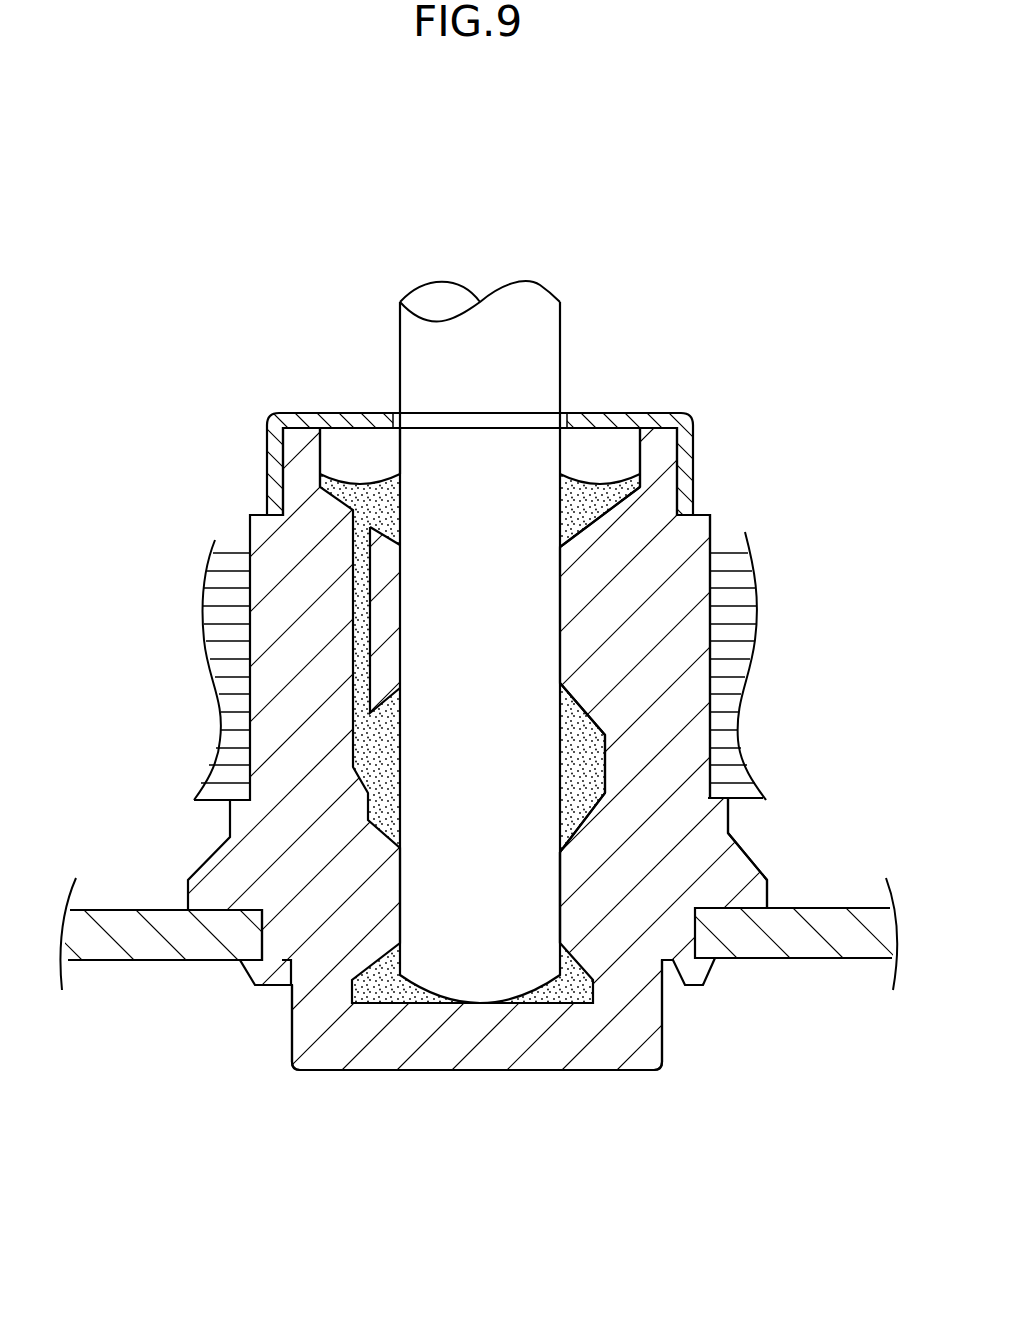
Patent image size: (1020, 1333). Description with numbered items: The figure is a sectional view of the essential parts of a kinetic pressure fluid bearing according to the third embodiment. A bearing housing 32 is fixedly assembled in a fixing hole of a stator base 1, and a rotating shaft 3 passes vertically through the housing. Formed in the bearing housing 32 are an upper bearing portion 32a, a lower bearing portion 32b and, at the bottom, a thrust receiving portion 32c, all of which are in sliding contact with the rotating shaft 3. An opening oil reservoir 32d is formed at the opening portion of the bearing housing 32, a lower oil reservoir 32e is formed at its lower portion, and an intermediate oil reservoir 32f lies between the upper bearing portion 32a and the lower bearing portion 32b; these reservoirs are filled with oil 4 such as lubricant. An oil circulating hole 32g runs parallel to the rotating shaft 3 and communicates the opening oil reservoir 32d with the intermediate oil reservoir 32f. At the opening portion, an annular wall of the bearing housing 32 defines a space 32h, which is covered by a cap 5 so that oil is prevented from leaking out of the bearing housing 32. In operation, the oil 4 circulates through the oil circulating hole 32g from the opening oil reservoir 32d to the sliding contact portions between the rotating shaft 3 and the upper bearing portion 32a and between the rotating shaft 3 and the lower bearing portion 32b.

The stator base 1 is at (812, 947).
The rotating shaft 3 is at (418, 368).
The oil 4 is at (590, 472).
The cap 5 is at (692, 428).
The bearing housing 32 is at (262, 1022).
The upper bearing portion 32a is at (560, 607).
The lower bearing portion 32b is at (558, 895).
The thrust receiving portion 32c is at (472, 1000).
The opening oil reservoir 32d is at (620, 472).
The lower oil reservoir 32e is at (587, 1000).
The intermediate oil reservoir 32f is at (587, 764).
The oil circulating hole 32g is at (355, 567).
The space 32h is at (352, 447).